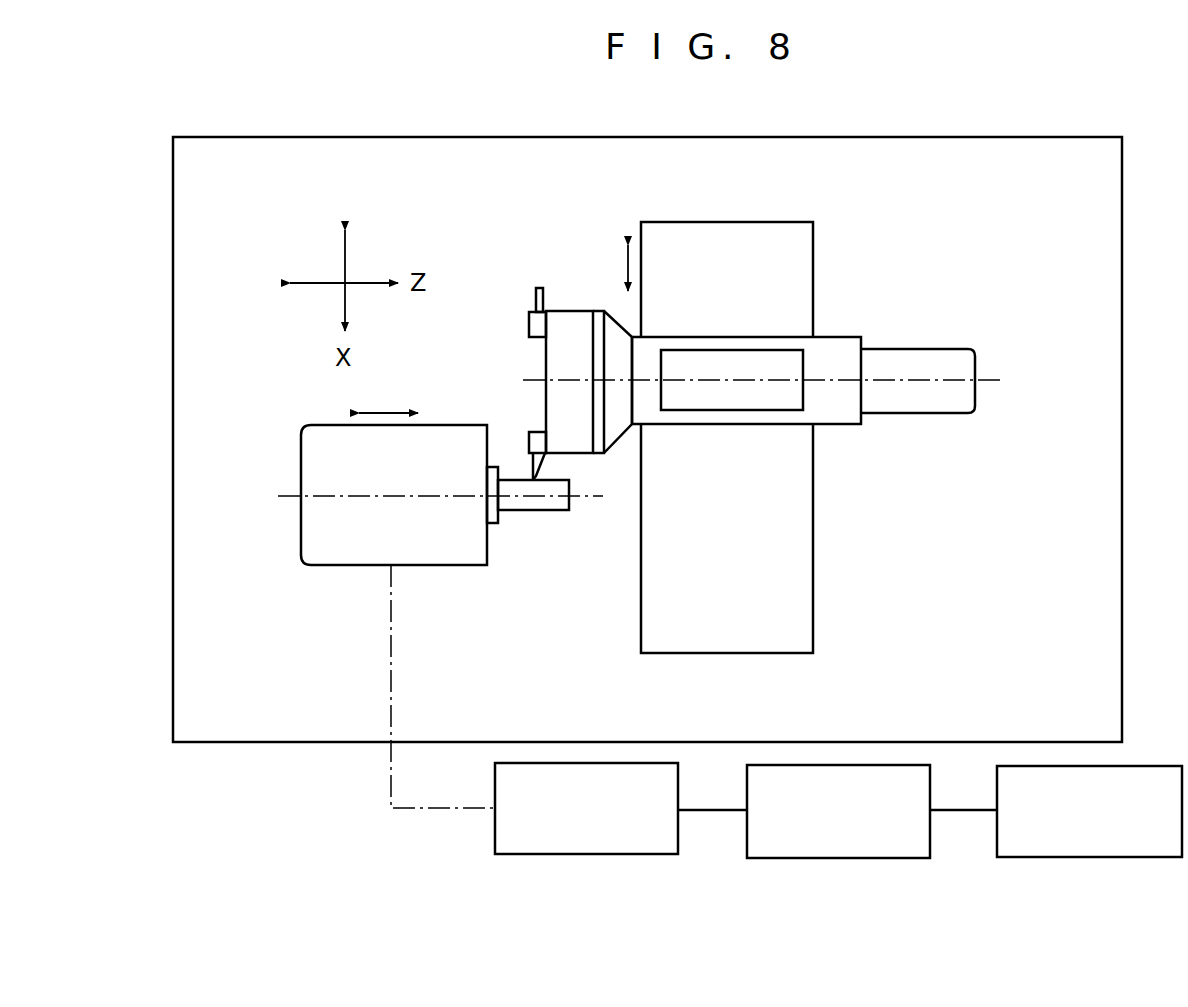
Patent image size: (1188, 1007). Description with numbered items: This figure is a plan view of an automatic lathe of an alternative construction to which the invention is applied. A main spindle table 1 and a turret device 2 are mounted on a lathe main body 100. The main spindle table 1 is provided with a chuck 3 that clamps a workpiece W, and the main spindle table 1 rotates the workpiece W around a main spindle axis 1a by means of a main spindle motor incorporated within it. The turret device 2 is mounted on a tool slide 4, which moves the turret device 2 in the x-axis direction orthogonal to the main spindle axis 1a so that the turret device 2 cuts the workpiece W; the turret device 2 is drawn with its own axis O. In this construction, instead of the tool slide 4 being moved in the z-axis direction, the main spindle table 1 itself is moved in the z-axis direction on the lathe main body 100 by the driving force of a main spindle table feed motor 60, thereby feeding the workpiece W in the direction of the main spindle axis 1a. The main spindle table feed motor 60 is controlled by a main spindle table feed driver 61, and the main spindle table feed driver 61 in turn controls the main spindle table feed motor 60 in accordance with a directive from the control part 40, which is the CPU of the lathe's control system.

The lathe main body 100 is at (1056, 130).
The main spindle table 1 is at (300, 444).
The main spindle axis 1a is at (365, 496).
The turret device 2 is at (842, 331).
The chuck 3 is at (498, 523).
The tool slide 4 is at (814, 223).
The workpiece W is at (548, 511).
The tool spindle axis O is at (530, 378).
The main spindle table feed motor 60 is at (601, 855).
The main spindle table feed driver 61 is at (834, 858).
The control part (CPU) 40 is at (1085, 858).